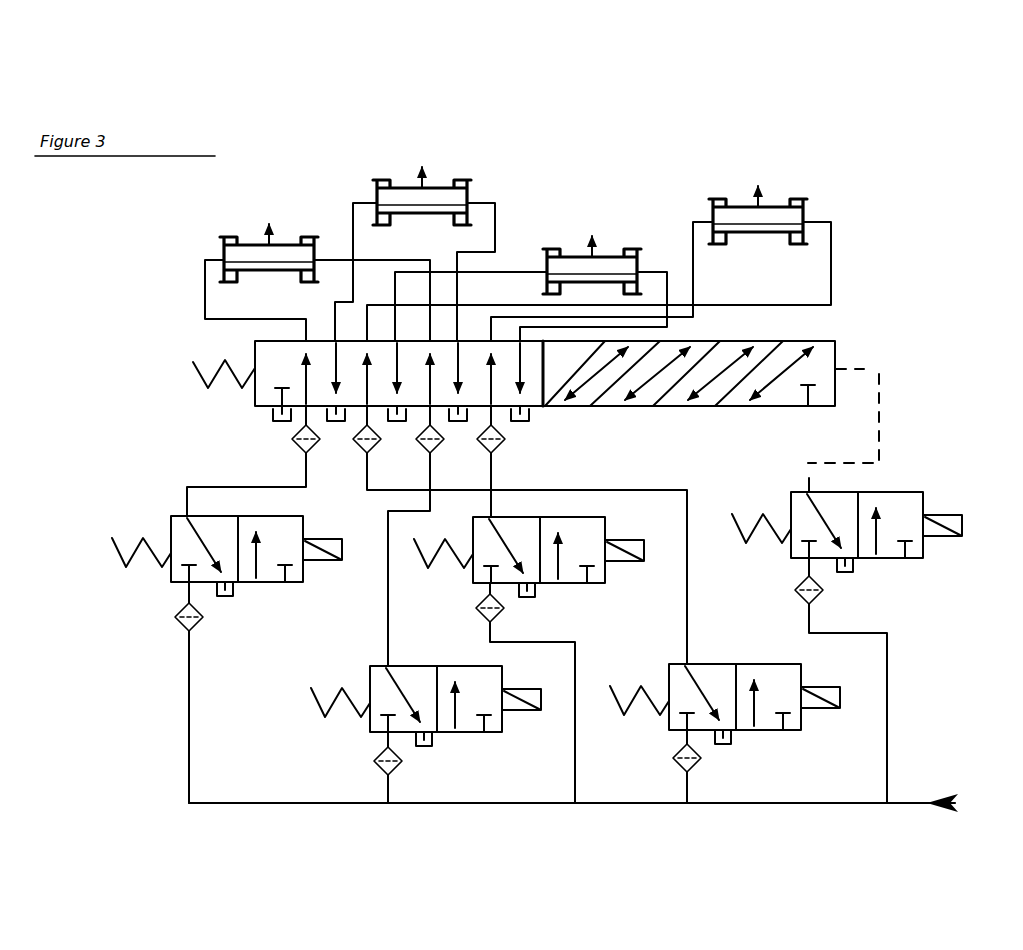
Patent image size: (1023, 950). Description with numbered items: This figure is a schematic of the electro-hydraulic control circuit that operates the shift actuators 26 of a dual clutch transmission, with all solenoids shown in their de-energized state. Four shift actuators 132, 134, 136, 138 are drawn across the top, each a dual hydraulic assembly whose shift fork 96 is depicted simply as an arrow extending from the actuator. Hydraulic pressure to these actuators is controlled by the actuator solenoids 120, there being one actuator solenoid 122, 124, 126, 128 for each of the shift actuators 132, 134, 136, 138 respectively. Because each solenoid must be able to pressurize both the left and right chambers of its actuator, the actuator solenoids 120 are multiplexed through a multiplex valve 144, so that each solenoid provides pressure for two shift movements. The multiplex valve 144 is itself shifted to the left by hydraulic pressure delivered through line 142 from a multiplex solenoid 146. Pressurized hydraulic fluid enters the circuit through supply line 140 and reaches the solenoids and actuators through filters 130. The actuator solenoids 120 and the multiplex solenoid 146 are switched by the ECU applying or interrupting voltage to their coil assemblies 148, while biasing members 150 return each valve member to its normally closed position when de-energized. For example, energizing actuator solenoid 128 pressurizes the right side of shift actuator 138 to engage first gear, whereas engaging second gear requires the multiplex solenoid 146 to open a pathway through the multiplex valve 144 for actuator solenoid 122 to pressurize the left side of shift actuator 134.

The shift actuators 26 is at (577, 168).
The shift forks 96 is at (278, 228).
The actuator solenoids 120 is at (160, 670).
The actuator solenoid 122 is at (262, 585).
The actuator solenoid 124 is at (458, 733).
The actuator solenoid 126 is at (565, 585).
The actuator solenoid 128 is at (707, 663).
The filters 130 is at (496, 446).
The shift actuator 132 is at (246, 240).
The shift actuator 134 is at (446, 180).
The shift actuator 136 is at (548, 244).
The shift actuator 138 is at (782, 200).
The line 140 is at (903, 803).
The line 142 is at (857, 369).
The multiplex valve 144 is at (575, 406).
The multiplex solenoid 146 is at (888, 493).
The coil assemblies 148 is at (313, 562).
The biasing members 150 is at (145, 540).